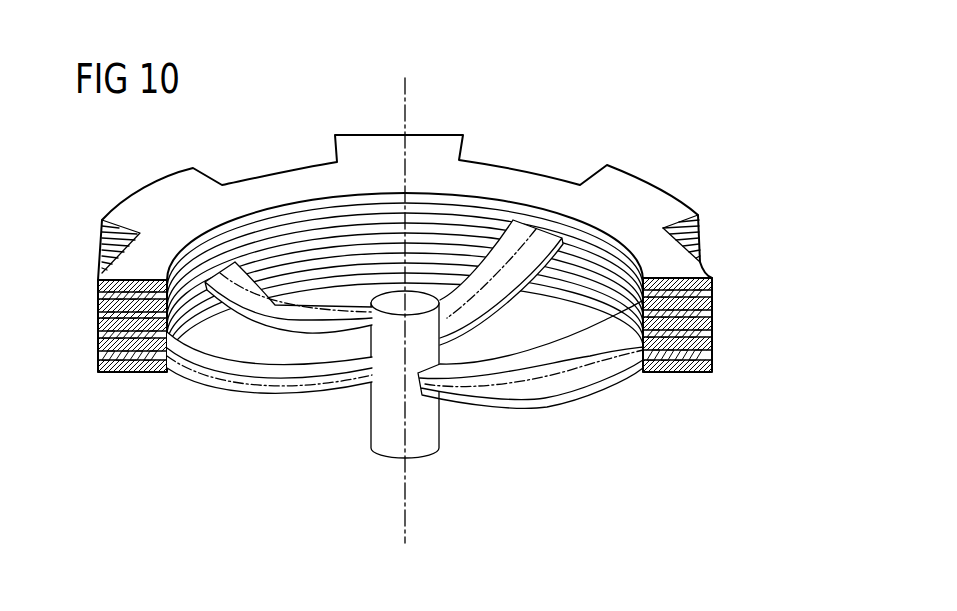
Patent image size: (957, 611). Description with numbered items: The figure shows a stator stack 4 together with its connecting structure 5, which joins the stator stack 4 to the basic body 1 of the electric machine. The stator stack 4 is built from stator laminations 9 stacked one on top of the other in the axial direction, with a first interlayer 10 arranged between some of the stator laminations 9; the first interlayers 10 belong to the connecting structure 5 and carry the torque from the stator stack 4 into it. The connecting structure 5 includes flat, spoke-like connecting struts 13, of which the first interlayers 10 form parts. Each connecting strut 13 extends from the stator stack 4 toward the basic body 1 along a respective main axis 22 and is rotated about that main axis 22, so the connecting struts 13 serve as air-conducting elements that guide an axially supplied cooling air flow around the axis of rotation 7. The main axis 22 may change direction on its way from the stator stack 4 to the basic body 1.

The basic body 1 is at (425, 447).
The stator stack 4 is at (660, 151).
The connecting structure 5 is at (272, 400).
The axis of rotation 7 is at (407, 100).
The stator laminations 9 is at (98, 366).
The first interlayer 10 is at (712, 355).
The connecting struts 13 is at (278, 308).
The main axis 22 is at (254, 292).